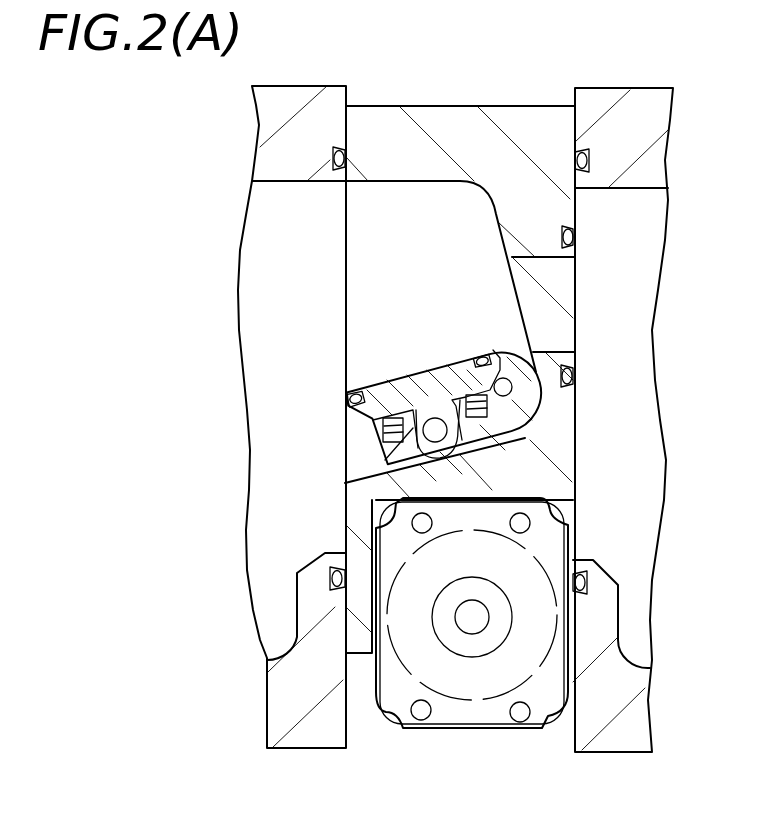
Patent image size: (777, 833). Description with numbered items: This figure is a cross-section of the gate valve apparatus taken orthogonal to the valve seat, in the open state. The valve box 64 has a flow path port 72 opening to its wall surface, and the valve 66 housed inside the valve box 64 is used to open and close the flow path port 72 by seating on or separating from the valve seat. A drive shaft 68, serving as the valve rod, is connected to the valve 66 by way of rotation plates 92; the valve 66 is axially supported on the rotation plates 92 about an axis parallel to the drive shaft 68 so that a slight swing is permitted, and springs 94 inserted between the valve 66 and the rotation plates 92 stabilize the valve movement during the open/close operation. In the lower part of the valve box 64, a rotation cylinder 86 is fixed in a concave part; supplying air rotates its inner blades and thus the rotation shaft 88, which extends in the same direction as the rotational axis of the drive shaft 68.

The valve box 64 is at (462, 130).
The flow path port 72 is at (548, 262).
The valve 66 is at (376, 378).
The drive shaft 68 is at (512, 390).
The spring 94 is at (363, 425).
The rotation plate 92 is at (507, 418).
The rotation cylinder 86 is at (412, 729).
The rotation shaft 88 is at (472, 622).